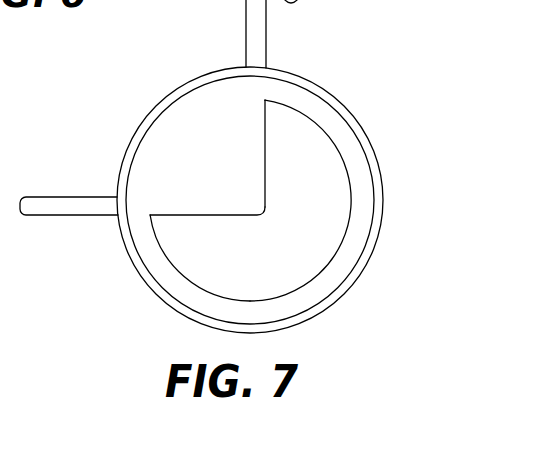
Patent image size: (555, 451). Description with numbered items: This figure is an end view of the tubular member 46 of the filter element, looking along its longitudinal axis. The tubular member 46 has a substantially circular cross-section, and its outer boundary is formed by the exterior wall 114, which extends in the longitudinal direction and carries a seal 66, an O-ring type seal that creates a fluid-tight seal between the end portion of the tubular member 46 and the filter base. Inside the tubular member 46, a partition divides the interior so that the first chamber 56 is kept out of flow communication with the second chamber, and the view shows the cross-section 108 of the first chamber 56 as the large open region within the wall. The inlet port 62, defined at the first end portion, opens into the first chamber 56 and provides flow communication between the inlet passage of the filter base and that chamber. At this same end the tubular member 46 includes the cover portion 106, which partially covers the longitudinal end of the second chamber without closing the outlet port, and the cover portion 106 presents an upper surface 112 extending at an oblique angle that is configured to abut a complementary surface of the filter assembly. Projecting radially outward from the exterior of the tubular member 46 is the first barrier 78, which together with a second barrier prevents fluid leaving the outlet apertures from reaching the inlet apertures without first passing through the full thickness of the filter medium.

The tubular member 46 is at (368, 66).
The seal 66 is at (382, 189).
The exterior wall 114 is at (178, 287).
The inlet port 62 is at (323, 160).
The first chamber 56 is at (313, 260).
The cross-section of first chamber 108 is at (300, 228).
The cover portion 106 is at (228, 105).
The upper surface 112 is at (181, 117).
The first barrier 78 is at (37, 210).